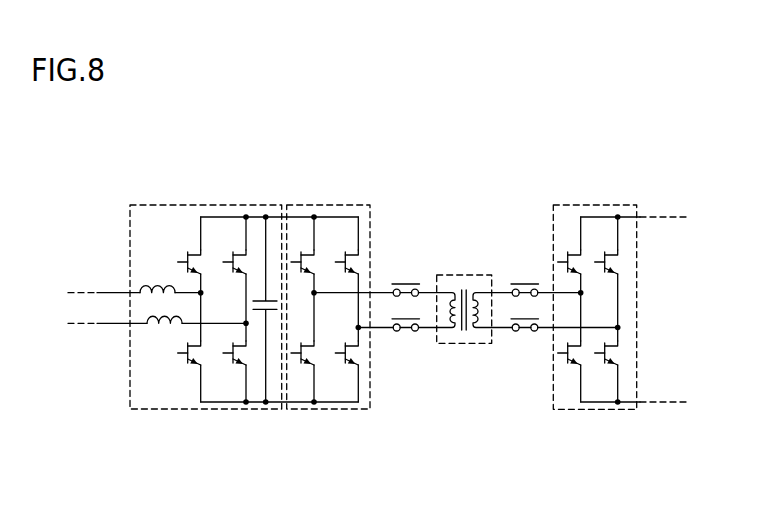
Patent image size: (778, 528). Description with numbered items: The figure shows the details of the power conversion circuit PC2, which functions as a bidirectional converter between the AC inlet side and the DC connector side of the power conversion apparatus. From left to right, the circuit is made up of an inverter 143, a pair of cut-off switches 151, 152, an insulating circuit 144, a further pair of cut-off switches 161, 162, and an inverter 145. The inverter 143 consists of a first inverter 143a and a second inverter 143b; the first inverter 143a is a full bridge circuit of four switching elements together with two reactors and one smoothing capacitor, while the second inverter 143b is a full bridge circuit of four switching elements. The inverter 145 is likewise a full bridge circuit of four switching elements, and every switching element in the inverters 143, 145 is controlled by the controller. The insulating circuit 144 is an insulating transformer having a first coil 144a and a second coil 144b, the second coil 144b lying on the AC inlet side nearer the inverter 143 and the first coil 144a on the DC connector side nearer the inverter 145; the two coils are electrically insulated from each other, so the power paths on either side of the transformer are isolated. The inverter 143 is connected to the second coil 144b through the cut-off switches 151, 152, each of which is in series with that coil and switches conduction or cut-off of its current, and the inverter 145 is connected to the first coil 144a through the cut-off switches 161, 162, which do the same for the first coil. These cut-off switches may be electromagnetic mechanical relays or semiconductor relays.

The inverter 143 is at (173, 147).
The first inverter 143a is at (208, 205).
The second inverter 143b is at (319, 205).
The insulating circuit 144 is at (462, 275).
The first coil 144a is at (482, 345).
The second coil 144b is at (447, 345).
The inverter 145 is at (600, 410).
The cut-off switch 151 is at (408, 284).
The cut-off switch 152 is at (407, 336).
The cut-off switch 161 is at (525, 284).
The cut-off switch 162 is at (524, 336).
The power conversion circuit PC2 is at (642, 130).